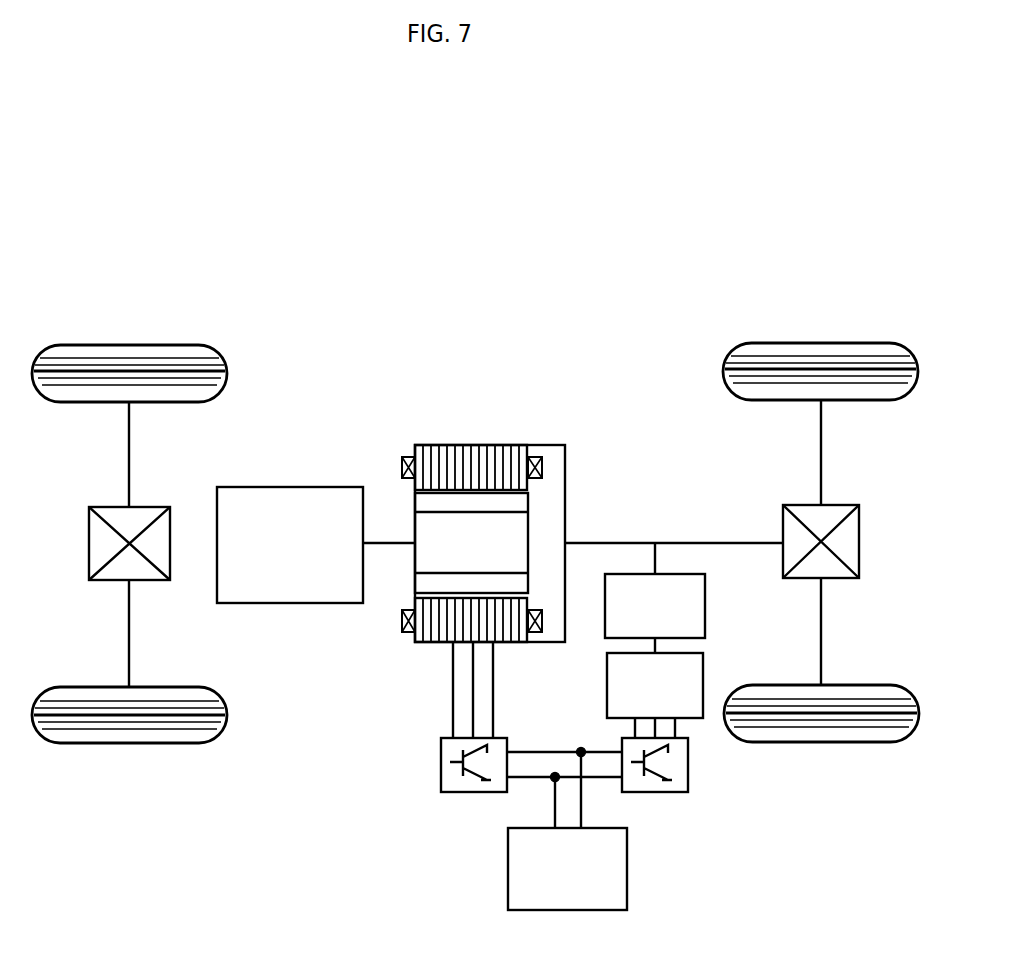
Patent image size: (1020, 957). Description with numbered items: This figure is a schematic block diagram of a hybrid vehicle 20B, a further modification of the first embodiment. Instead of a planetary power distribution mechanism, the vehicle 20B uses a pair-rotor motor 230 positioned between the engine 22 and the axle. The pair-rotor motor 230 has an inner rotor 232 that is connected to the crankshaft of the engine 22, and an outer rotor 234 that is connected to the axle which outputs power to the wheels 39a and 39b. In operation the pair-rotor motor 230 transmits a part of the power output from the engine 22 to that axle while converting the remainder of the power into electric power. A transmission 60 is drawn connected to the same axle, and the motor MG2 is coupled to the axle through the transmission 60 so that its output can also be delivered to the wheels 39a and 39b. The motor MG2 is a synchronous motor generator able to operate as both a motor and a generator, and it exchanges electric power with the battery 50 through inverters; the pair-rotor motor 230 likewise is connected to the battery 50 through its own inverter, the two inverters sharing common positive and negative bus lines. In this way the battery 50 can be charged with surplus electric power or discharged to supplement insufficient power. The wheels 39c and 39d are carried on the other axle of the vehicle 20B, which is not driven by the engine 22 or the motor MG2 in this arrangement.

The hybrid vehicle 20B is at (601, 250).
The engine 22 is at (291, 603).
The pair-rotor motor 230 is at (507, 303).
The inner rotor 232 is at (415, 527).
The outer rotor 234 is at (493, 445).
The drive wheel 39a is at (820, 343).
The drive wheel 39b is at (823, 742).
The wheel 39c is at (130, 345).
The wheel 39d is at (130, 743).
The battery 50 is at (627, 871).
The transmission 60 is at (705, 607).
The motor MG2 is at (607, 688).